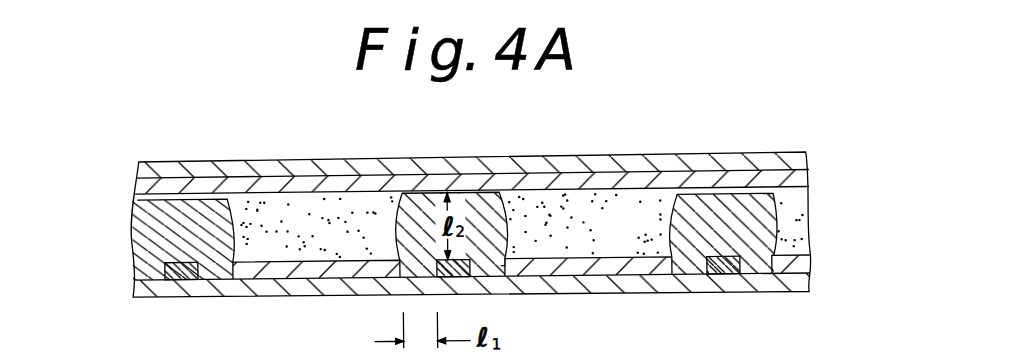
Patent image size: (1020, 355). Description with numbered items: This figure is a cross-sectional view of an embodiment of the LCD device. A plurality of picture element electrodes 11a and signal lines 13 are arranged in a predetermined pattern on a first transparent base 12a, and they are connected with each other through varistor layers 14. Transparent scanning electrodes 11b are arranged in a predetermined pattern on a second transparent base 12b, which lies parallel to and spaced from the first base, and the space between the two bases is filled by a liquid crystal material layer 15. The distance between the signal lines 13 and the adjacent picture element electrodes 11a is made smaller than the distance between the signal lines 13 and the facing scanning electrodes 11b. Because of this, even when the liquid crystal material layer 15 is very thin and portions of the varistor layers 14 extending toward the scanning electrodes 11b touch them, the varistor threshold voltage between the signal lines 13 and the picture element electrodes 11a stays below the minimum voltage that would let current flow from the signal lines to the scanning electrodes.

The second transparent base 12b is at (395, 170).
The transparent scanning electrodes 11b is at (535, 185).
The liquid crystal material layer 15 is at (648, 216).
The first transparent base 12a is at (186, 291).
The picture element electrodes 11a is at (273, 272).
The signal lines 13 is at (470, 282).
The varistor layers 14 is at (503, 282).